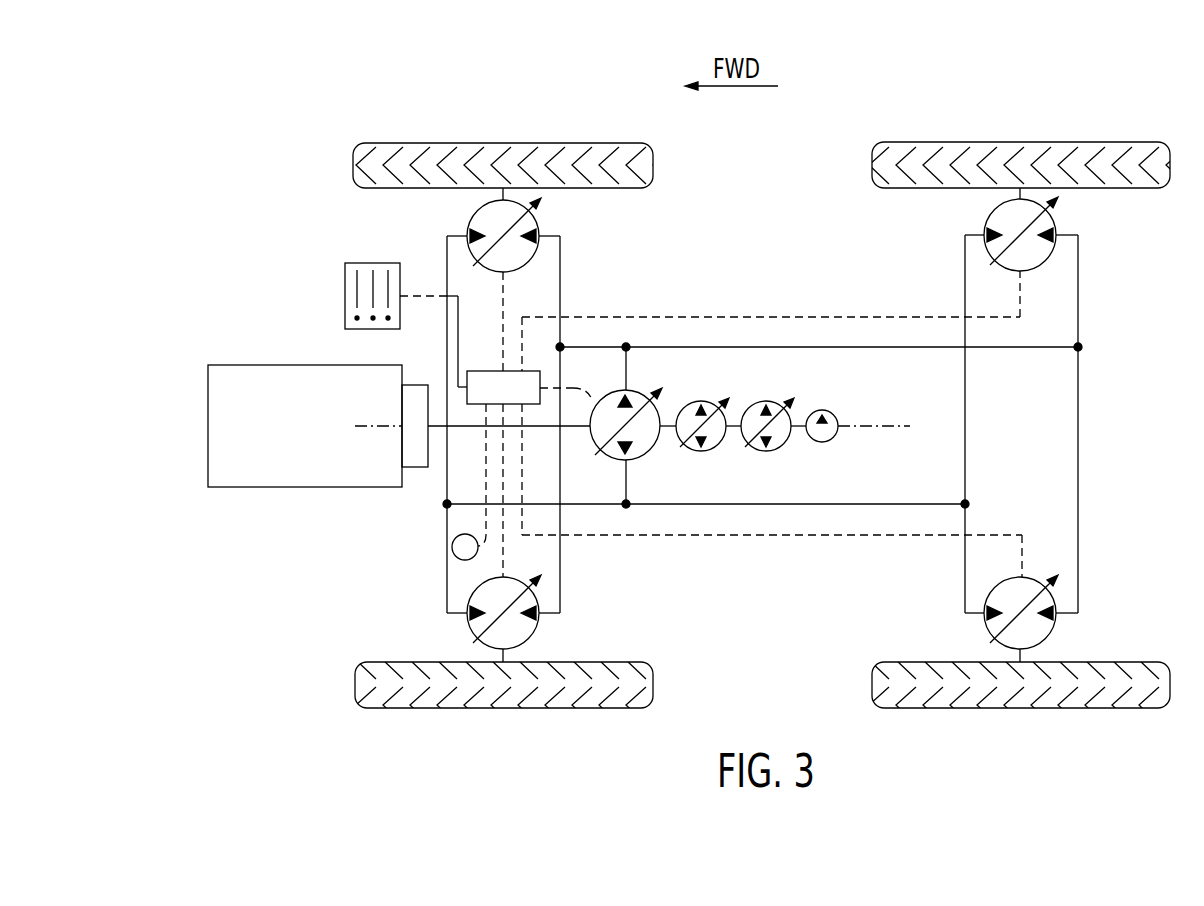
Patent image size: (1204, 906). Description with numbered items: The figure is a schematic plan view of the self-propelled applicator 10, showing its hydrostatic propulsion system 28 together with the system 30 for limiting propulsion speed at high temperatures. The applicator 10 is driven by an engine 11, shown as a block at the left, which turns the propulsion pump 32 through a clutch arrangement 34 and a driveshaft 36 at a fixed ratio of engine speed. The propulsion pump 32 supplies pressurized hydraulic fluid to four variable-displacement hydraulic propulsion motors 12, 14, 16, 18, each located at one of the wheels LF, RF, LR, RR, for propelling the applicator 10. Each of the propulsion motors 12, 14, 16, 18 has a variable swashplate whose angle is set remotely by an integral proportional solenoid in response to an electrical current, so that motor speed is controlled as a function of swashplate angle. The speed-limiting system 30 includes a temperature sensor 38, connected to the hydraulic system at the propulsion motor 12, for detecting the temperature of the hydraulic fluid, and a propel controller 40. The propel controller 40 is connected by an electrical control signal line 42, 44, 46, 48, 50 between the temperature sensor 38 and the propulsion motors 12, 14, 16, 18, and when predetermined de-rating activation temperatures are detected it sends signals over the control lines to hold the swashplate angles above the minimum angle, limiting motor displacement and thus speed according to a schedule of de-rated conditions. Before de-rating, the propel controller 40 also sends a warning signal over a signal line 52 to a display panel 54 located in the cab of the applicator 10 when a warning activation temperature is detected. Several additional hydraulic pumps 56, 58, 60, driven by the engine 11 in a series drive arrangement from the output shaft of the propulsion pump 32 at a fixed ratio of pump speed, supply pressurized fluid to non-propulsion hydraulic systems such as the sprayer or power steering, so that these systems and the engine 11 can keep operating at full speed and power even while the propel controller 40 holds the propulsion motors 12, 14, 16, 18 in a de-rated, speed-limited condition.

The self-propelled applicator 10 is at (870, 96).
The engine 11 is at (300, 474).
The variable-displacement hydraulic propulsion motor 12 is at (529, 642).
The variable-displacement hydraulic propulsion motor 14 is at (531, 263).
The variable-displacement hydraulic propulsion motor 16 is at (1046, 640).
The variable-displacement hydraulic propulsion motor 18 is at (1046, 262).
The hydrostatic propulsion system 28 is at (1001, 100).
The system for limiting propulsion speed 30 is at (1047, 96).
The propulsion pump 32 is at (650, 450).
The clutch arrangement 34 is at (412, 448).
The driveshaft 36 is at (462, 422).
The temperature sensor 38 is at (463, 562).
The propel controller 40 is at (523, 384).
The electrical control signal line 42 is at (485, 487).
The electrical control signal line 44 is at (503, 553).
The electrical control signal line 46 is at (503, 293).
The electrical control signal line 48 is at (910, 535).
The electrical control signal line 50 is at (771, 317).
The signal line 52 is at (428, 294).
The display panel 54 is at (345, 296).
The additional hydraulic pump 56 is at (719, 446).
The additional hydraulic pump 58 is at (784, 446).
The additional hydraulic pump 60 is at (829, 440).
The right front wheel RF is at (410, 143).
The left front wheel LF is at (610, 708).
The right rear wheel RR is at (1055, 143).
The left rear wheel LR is at (1130, 708).